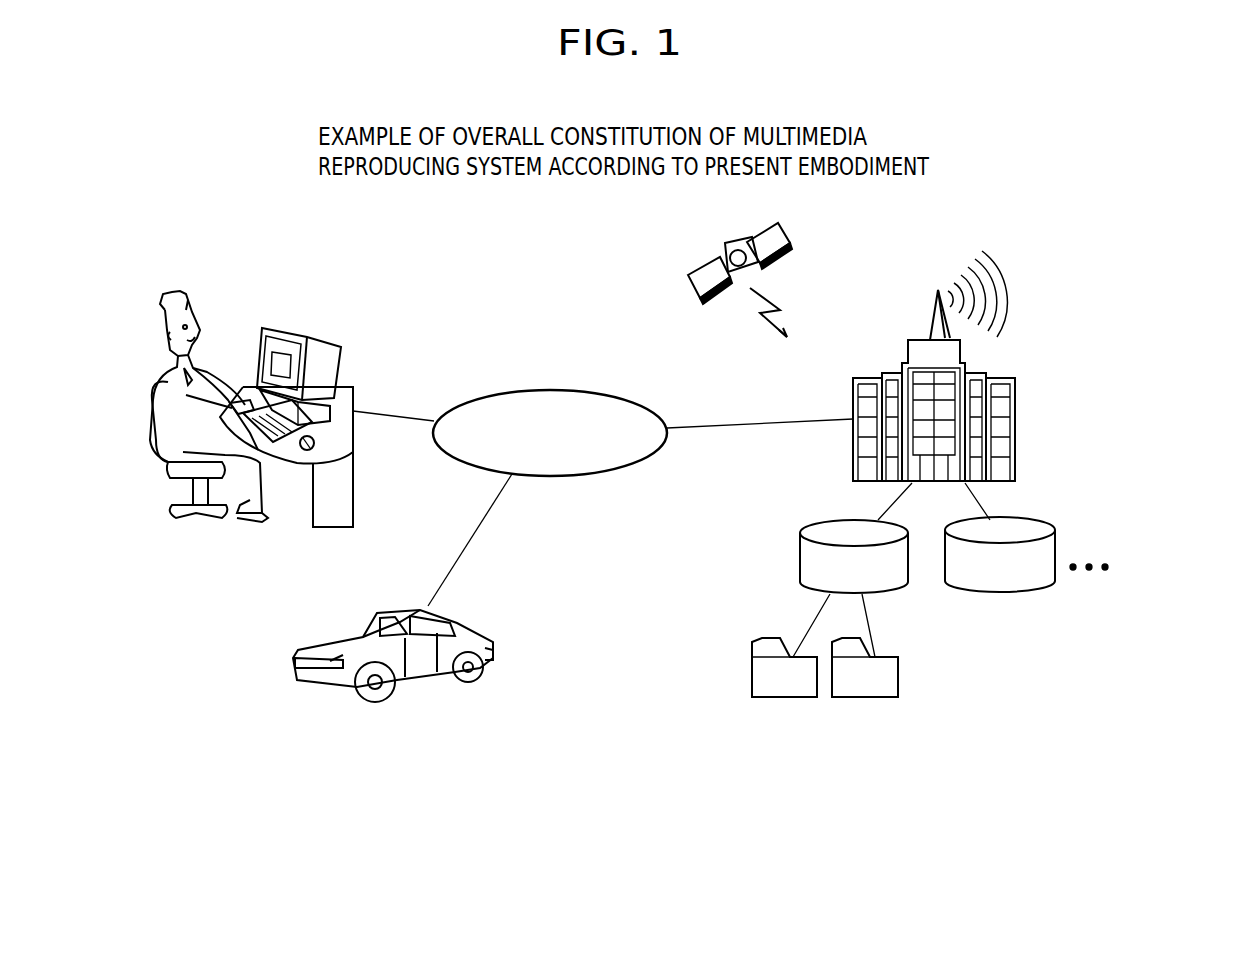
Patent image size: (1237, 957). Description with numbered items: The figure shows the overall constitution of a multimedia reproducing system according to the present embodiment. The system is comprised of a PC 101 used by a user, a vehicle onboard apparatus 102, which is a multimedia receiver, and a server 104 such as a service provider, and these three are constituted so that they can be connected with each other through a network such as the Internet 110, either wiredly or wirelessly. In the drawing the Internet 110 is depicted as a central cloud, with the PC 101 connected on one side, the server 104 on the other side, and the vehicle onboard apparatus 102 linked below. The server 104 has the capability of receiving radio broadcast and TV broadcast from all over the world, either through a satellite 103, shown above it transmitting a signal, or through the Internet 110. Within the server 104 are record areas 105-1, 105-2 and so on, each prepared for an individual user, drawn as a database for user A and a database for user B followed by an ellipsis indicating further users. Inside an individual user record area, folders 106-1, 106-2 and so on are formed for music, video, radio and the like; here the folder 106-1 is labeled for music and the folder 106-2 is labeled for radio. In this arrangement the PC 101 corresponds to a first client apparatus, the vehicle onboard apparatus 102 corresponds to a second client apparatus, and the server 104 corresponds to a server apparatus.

The PC 101 is at (303, 322).
The vehicle onboard apparatus 102 is at (460, 630).
The satellite 103 is at (784, 233).
The server 104 is at (1016, 428).
The record area 105-1 is at (800, 556).
The record area 105-2 is at (1055, 536).
The folder 106-1 is at (783, 699).
The folder 106-2 is at (865, 699).
The Internet 110 is at (557, 390).